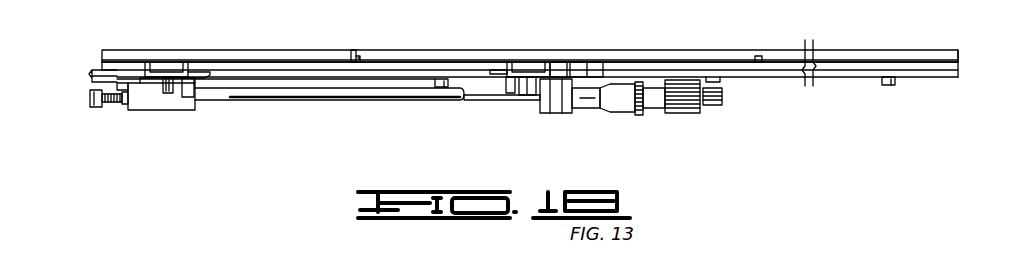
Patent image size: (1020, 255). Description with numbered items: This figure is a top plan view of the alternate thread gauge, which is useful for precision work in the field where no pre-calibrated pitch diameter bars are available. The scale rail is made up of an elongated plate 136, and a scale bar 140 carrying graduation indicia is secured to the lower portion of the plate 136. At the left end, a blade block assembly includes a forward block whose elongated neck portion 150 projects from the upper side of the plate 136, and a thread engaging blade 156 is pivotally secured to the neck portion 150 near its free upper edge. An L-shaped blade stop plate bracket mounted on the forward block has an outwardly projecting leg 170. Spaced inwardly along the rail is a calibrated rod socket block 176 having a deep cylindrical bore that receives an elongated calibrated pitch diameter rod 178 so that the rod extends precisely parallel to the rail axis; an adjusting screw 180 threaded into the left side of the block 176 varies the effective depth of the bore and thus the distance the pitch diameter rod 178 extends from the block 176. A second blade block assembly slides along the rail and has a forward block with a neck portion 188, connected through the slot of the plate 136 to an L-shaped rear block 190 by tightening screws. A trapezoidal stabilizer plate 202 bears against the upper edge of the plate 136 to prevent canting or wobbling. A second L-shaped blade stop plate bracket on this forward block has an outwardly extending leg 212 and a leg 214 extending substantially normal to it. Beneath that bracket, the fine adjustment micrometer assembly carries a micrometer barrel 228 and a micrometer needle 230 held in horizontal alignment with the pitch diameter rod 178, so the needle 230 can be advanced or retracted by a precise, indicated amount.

The elongated plate 136 is at (280, 58).
The scale bar 140 is at (784, 76).
The elongated neck portion 150 is at (160, 65).
The thread engaging blade 156 is at (168, 76).
The outwardly projecting leg 170 is at (92, 72).
The calibrated rod socket block 176 is at (147, 104).
The calibrated pitch diameter rod 178 is at (252, 99).
The adjusting screw 180 is at (99, 108).
The neck portion 188 is at (515, 62).
The L-shaped rear block 190 is at (490, 99).
The stabilizer plate 202 is at (420, 56).
The outwardly extending leg 212 is at (598, 75).
The leg 214 is at (557, 76).
The micrometer barrel 228 is at (589, 111).
The micrometer needle 230 is at (687, 109).